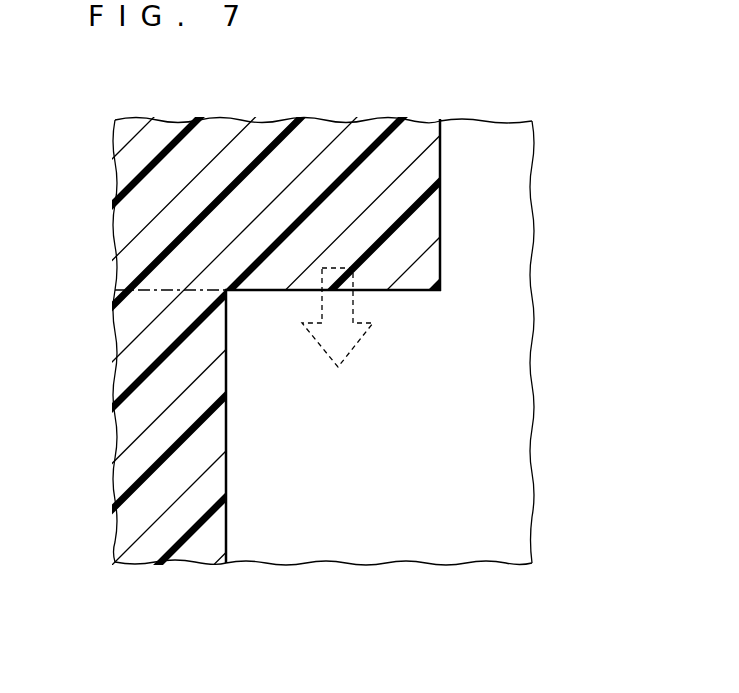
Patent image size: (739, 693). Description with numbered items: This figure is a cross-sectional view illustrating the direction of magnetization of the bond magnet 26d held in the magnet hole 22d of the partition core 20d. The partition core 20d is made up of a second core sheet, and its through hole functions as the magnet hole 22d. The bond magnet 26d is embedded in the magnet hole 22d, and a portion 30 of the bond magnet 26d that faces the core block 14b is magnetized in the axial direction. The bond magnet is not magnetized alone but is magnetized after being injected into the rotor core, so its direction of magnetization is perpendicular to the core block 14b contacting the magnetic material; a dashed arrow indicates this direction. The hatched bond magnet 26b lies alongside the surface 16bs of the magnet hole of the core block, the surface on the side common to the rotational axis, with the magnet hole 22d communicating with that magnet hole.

The bond magnet 26d is at (236, 138).
The bond magnet 26b is at (117, 458).
The magnet hole 22d is at (441, 187).
The portion facing the core block 30 is at (427, 290).
The surface of the magnet hole 16bs is at (226, 478).
The core block 14b is at (323, 547).
The partition core 20d is at (497, 138).